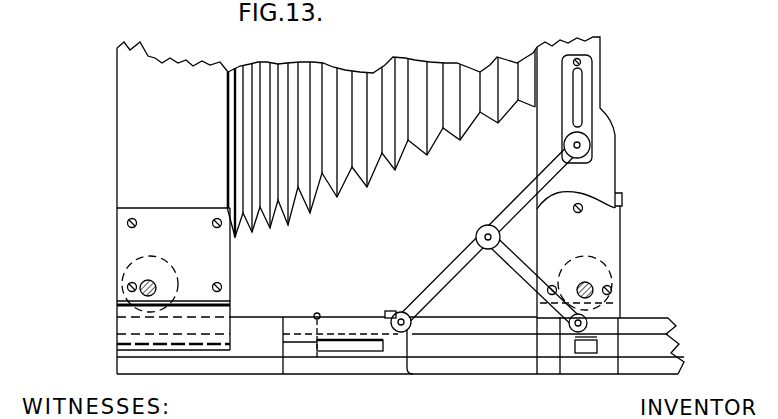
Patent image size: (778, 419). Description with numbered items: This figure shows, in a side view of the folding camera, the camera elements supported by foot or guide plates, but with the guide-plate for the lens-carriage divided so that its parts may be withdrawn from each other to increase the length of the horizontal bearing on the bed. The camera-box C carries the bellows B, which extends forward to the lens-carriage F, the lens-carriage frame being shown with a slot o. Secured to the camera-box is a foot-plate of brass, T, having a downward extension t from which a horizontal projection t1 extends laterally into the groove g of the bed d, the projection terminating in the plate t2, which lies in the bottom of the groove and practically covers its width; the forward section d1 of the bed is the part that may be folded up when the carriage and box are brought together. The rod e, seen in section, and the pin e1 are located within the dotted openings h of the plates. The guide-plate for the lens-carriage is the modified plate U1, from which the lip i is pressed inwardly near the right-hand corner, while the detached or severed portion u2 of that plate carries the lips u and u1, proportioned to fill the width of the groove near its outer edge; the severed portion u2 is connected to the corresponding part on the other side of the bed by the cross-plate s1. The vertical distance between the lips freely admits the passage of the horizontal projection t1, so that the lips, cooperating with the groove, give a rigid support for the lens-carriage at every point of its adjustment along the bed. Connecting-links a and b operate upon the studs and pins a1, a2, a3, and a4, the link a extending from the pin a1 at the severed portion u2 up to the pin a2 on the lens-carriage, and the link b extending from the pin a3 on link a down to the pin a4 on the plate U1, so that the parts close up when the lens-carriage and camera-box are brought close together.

The camera body C is at (173, 208).
The bellows B is at (382, 142).
The front frame F is at (603, 152).
The slot o is at (583, 90).
The connecting-link a is at (472, 237).
The connecting-link b is at (498, 268).
The stud or pin a1 is at (410, 320).
The stud or pin a2 is at (590, 133).
The stud or pin a3 is at (492, 234).
The stud or pin a4 is at (586, 320).
The cross-plate s1 is at (383, 312).
The guide-plate for the lens-carriage U1 is at (602, 255).
The hole h is at (133, 263).
The shaft or rod e is at (155, 283).
The pin e1 is at (593, 286).
The foot-plate T is at (232, 304).
The downward extension t is at (173, 330).
The horizontal projection t1 is at (583, 355).
The plate t2 is at (262, 347).
The base board d is at (244, 365).
The base board section d1 is at (428, 366).
The lip u is at (327, 340).
The lip u1 is at (343, 356).
The severed portion of the guide-plate u2 is at (368, 362).
The guide g is at (488, 348).
The lip i is at (598, 355).